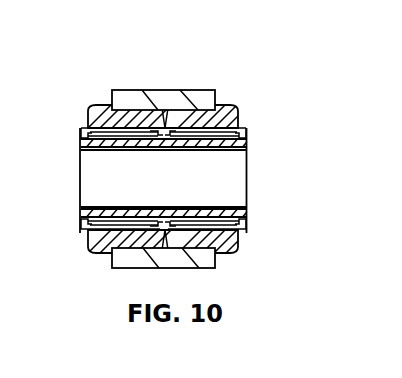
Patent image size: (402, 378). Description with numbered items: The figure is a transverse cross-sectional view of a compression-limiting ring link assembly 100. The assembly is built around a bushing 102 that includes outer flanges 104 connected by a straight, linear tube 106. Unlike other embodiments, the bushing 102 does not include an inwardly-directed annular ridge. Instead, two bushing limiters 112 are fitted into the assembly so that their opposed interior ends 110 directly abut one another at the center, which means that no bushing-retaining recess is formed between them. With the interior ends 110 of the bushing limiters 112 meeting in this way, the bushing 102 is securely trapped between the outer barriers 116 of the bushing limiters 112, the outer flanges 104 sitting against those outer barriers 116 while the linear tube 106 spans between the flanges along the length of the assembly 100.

The compression-limiting ring link assembly 100 is at (118, 66).
The bushing 102 is at (224, 107).
The outer flanges 104 is at (96, 104).
The tube 106 is at (166, 130).
The interior ends 110 is at (163, 131).
The bushing limiters 112 is at (80, 233).
The outer barriers 116 is at (80, 128).